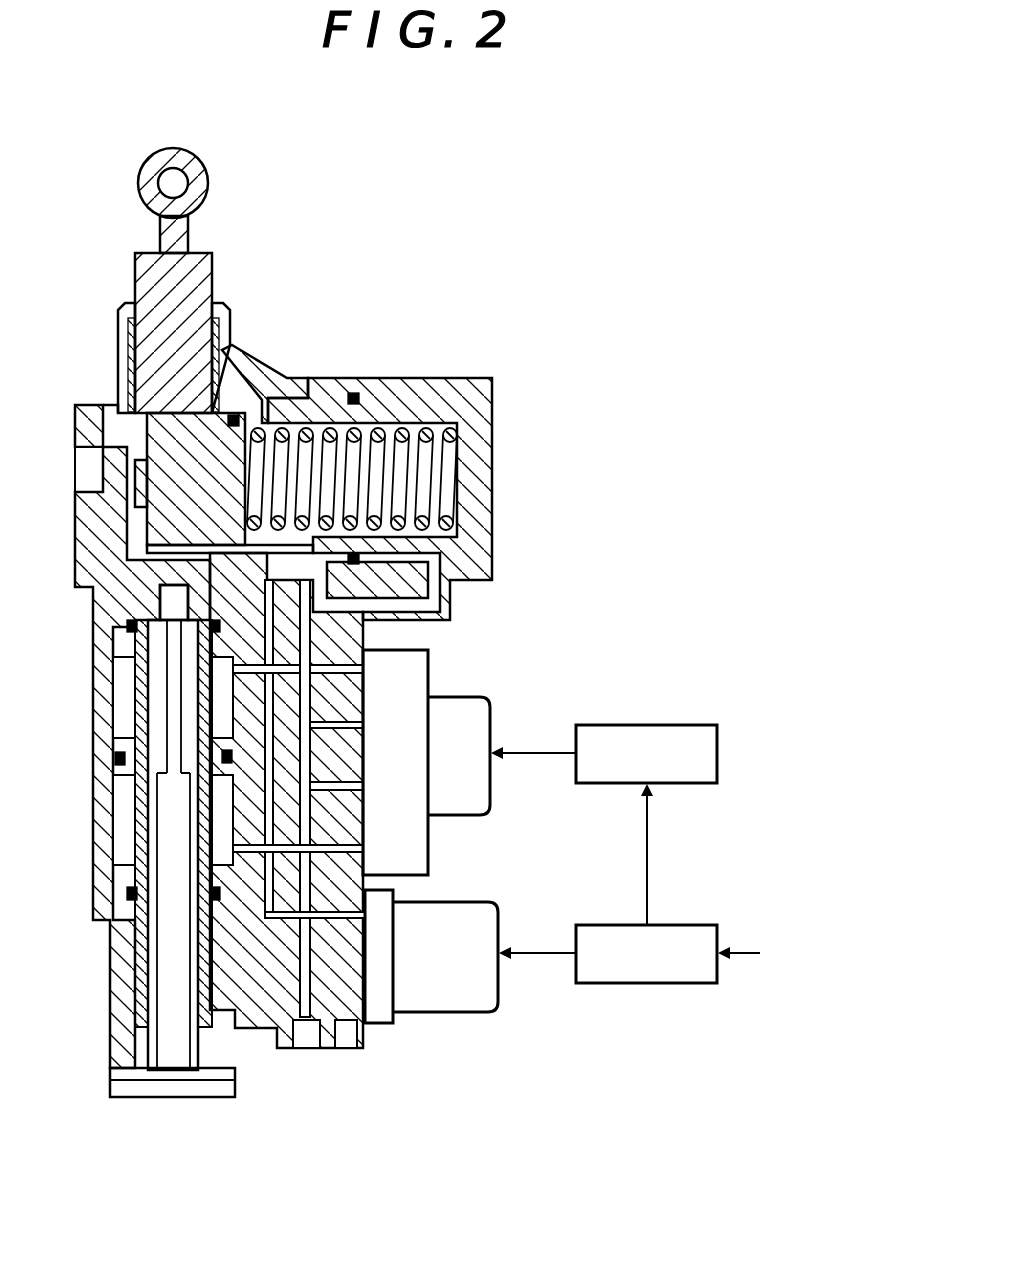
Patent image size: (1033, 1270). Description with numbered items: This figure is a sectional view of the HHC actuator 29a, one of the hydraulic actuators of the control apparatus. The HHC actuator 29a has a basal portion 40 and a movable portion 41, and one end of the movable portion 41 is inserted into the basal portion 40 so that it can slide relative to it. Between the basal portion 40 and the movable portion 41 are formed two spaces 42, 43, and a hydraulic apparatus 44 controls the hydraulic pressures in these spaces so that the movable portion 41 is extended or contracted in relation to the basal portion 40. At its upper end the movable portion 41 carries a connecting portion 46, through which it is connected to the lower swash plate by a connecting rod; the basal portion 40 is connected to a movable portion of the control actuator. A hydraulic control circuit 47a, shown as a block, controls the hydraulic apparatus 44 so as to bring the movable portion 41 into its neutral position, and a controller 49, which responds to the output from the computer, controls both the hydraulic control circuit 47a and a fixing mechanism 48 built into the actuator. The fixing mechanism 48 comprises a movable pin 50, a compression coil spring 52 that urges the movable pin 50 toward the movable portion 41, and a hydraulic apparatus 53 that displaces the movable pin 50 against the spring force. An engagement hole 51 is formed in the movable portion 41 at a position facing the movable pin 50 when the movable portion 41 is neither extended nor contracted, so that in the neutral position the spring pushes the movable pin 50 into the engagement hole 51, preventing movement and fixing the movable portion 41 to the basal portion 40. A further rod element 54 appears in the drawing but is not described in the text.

The HHC actuator 29a is at (418, 240).
The basal portion 40 is at (227, 1060).
The movable portion 41 is at (195, 282).
The space 42 is at (222, 704).
The space 43 is at (222, 822).
The hydraulic apparatus 44 is at (405, 690).
The connecting portion 46 is at (193, 174).
The hydraulic control circuit 47a is at (643, 725).
The fixing mechanism 48 is at (390, 418).
The controller 49 is at (657, 990).
The movable pin 50 is at (236, 462).
The engagement hole 51 is at (157, 432).
The compression coil spring 52 is at (430, 458).
The hydraulic apparatus 53 is at (437, 993).
The rod 54 is at (232, 482).